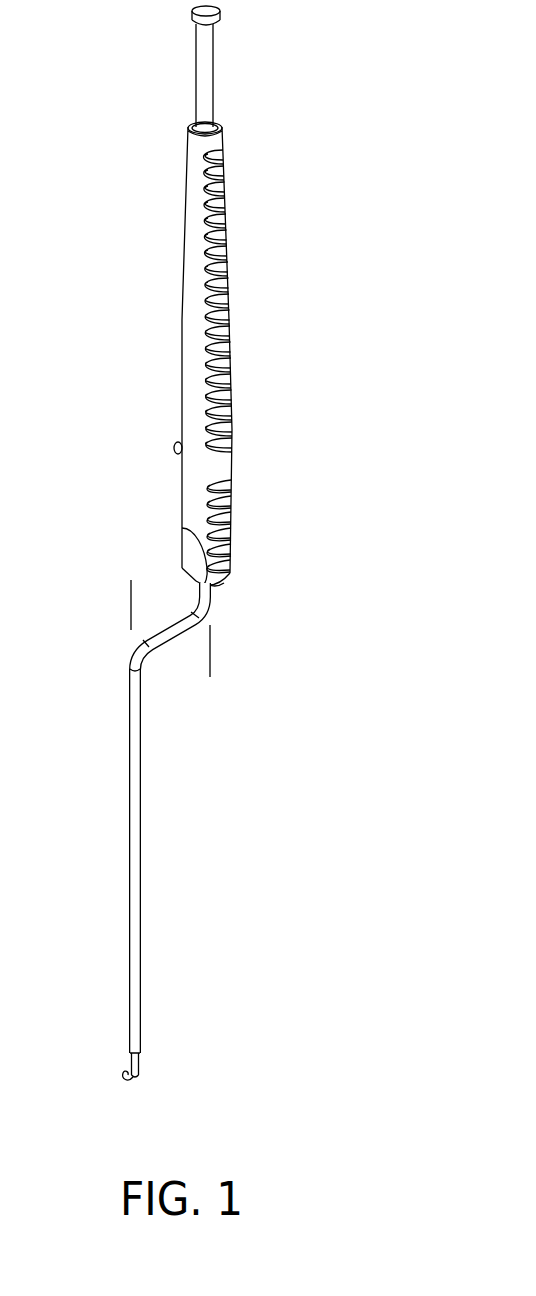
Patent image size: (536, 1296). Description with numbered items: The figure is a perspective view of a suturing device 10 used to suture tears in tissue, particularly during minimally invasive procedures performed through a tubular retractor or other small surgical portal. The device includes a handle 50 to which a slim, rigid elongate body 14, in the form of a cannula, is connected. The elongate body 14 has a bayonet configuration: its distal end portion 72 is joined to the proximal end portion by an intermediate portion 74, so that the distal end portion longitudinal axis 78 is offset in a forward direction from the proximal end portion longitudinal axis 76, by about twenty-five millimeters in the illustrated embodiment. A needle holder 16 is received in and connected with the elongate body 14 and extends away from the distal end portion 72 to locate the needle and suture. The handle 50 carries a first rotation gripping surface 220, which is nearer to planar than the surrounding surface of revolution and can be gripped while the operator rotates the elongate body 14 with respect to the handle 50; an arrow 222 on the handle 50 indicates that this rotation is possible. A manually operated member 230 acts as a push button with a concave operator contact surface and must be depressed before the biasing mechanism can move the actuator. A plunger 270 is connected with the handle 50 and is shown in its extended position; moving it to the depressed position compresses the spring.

The suturing device 10 is at (333, 203).
The elongate body 14 is at (135, 710).
The needle holder 16 is at (127, 1080).
The handle 50 is at (197, 423).
The distal end portion 72 is at (135, 1030).
The intermediate portion 74 is at (167, 627).
The proximal end portion longitudinal axis 76 is at (210, 650).
The distal end portion longitudinal axis 78 is at (131, 616).
The first rotation gripping surface 220 is at (232, 362).
The arrow 222 is at (223, 583).
The manually operated member 230 is at (173, 444).
The plunger 270 is at (209, 75).